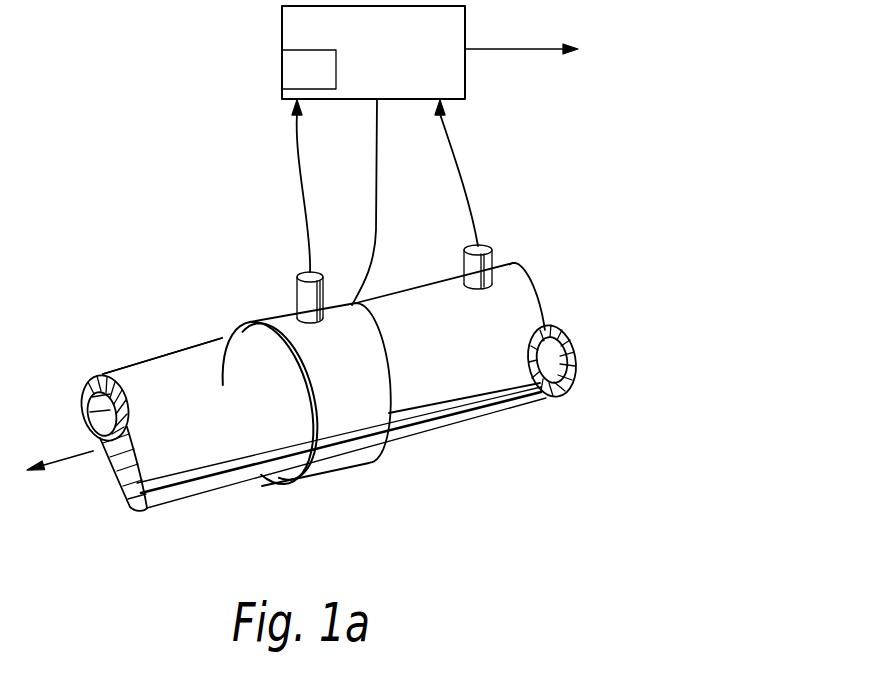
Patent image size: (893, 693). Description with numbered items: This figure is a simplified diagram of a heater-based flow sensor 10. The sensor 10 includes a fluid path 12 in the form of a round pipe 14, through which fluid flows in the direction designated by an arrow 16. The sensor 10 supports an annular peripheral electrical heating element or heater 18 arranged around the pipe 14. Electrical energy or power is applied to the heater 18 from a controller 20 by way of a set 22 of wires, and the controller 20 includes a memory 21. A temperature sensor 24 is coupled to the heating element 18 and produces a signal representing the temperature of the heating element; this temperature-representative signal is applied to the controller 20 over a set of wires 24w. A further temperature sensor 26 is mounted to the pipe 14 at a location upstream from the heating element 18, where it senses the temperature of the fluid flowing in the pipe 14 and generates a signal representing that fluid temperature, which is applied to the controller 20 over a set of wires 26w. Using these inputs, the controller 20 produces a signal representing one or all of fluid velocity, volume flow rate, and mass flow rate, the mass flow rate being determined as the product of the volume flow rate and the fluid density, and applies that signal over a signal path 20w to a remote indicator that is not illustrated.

The sensor 10 is at (291, 553).
The fluid path 12 is at (100, 413).
The round pipe 14 is at (224, 488).
The arrow 16 is at (64, 460).
The annular peripheral electrical heating element 18 is at (337, 464).
The controller 20 is at (282, 22).
The memory 21 is at (282, 66).
The signal path 20w is at (509, 47).
The set of wires 22 is at (376, 218).
The temperature sensor 24 is at (297, 282).
The set of wires 24w is at (303, 214).
The further temperature sensor 26 is at (491, 250).
The set of wires 26w is at (465, 189).